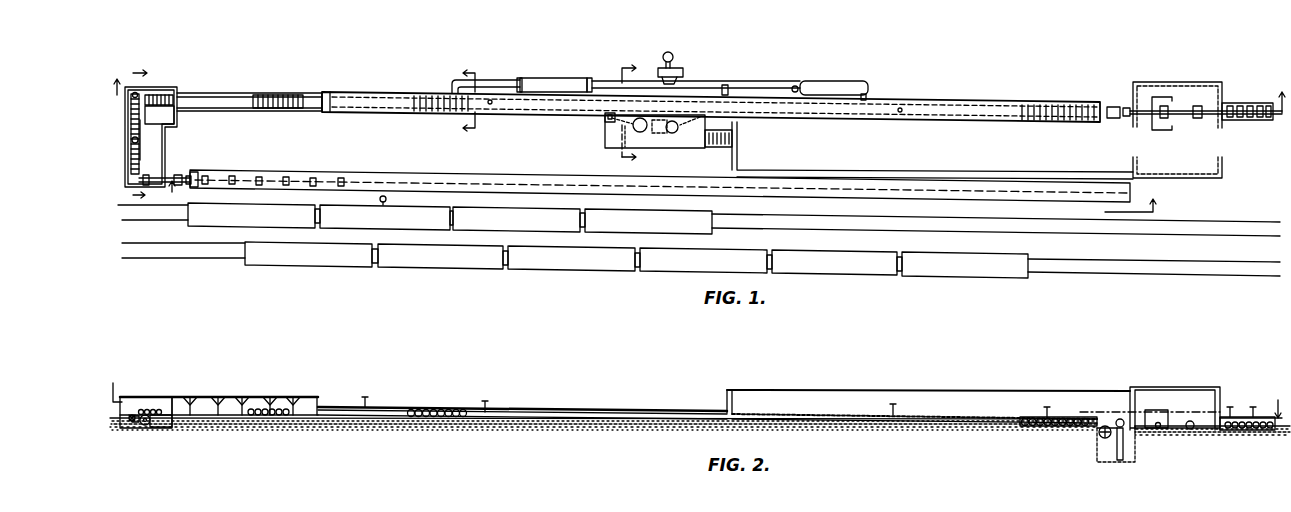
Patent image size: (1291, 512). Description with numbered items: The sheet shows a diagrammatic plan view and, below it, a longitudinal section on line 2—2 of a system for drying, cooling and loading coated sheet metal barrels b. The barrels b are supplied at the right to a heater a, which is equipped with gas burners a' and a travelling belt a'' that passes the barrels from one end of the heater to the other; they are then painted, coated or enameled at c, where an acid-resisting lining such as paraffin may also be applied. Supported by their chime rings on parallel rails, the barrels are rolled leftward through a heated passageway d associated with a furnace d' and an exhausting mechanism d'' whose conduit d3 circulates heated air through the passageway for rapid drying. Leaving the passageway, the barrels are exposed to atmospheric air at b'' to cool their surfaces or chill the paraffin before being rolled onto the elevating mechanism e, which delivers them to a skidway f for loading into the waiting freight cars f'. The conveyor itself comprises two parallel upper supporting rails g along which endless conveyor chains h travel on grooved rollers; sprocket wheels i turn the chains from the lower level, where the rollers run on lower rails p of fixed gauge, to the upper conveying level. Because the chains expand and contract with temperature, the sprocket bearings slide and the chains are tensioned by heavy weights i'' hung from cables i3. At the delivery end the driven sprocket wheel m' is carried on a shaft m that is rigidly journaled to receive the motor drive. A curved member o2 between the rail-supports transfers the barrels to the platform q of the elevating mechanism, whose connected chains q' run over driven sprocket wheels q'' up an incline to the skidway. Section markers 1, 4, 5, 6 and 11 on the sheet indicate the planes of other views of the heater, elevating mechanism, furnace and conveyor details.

In FIG. 1, the heater a is at (1247, 95).
In FIG. 2, the heater a is at (1251, 442).
In FIG. 2, the gas burners a' is at (1244, 447).
In FIG. 2, the travelling belt a'' is at (1247, 403).
In FIG. 1, the barrels b is at (727, 145).
In FIG. 2, the barrels b is at (810, 397).
In FIG. 1, the cooling station b'' is at (224, 83).
In FIG. 2, the cooling station b'' is at (268, 389).
In FIG. 1, the painting or coating station c is at (1163, 98).
In FIG. 2, the painting or coating station c is at (1158, 416).
In FIG. 1, the heated passageway d is at (711, 87).
In FIG. 2, the heated passageway d is at (724, 400).
In FIG. 1, the furnace d' is at (668, 143).
In FIG. 1, the exhausting mechanism d'' is at (688, 59).
In FIG. 1, the conduit d3 is at (565, 78).
In FIG. 1, the elevating mechanism e is at (139, 140).
In FIG. 2, the elevating mechanism e is at (134, 414).
In FIG. 1, the skidway f is at (655, 175).
In FIG. 1, the freight cars f' is at (699, 216).
In FIG. 1, the supporting rails g is at (237, 96).
In FIG. 2, the supporting rails g is at (352, 422).
In FIG. 1, the conveyor chains h is at (207, 93).
In FIG. 2, the conveyor chains h is at (393, 421).
In FIG. 1, the sprocket wheels i is at (1116, 105).
In FIG. 2, the sprocket wheels i is at (1099, 448).
In FIG. 2, the heavy weights i'' is at (1132, 452).
In FIG. 2, the cables i3 is at (1127, 441).
In FIG. 2, the shaft m is at (148, 430).
In FIG. 1, the sprocket wheel m' is at (171, 105).
In FIG. 2, the sprocket wheel m' is at (128, 439).
In FIG. 1, the curved member o2 is at (138, 92).
In FIG. 2, the lower rails p is at (333, 425).
In FIG. 1, the platform q is at (151, 111).
In FIG. 1, the connected chains q' is at (149, 144).
In FIG. 1, the driven sprocket wheels q'' is at (163, 208).
In FIG. 2, the section line 1- 1 is at (697, 394).
In FIG. 1, the section line 2— 2 is at (699, 85).
In FIG. 1, the section line 4- 4 is at (662, 196).
In FIG. 1, the section line 5- 5 is at (147, 135).
In FIG. 1, the section line 6- 6 is at (636, 107).
In FIG. 1, the section line 11- 11 is at (463, 104).